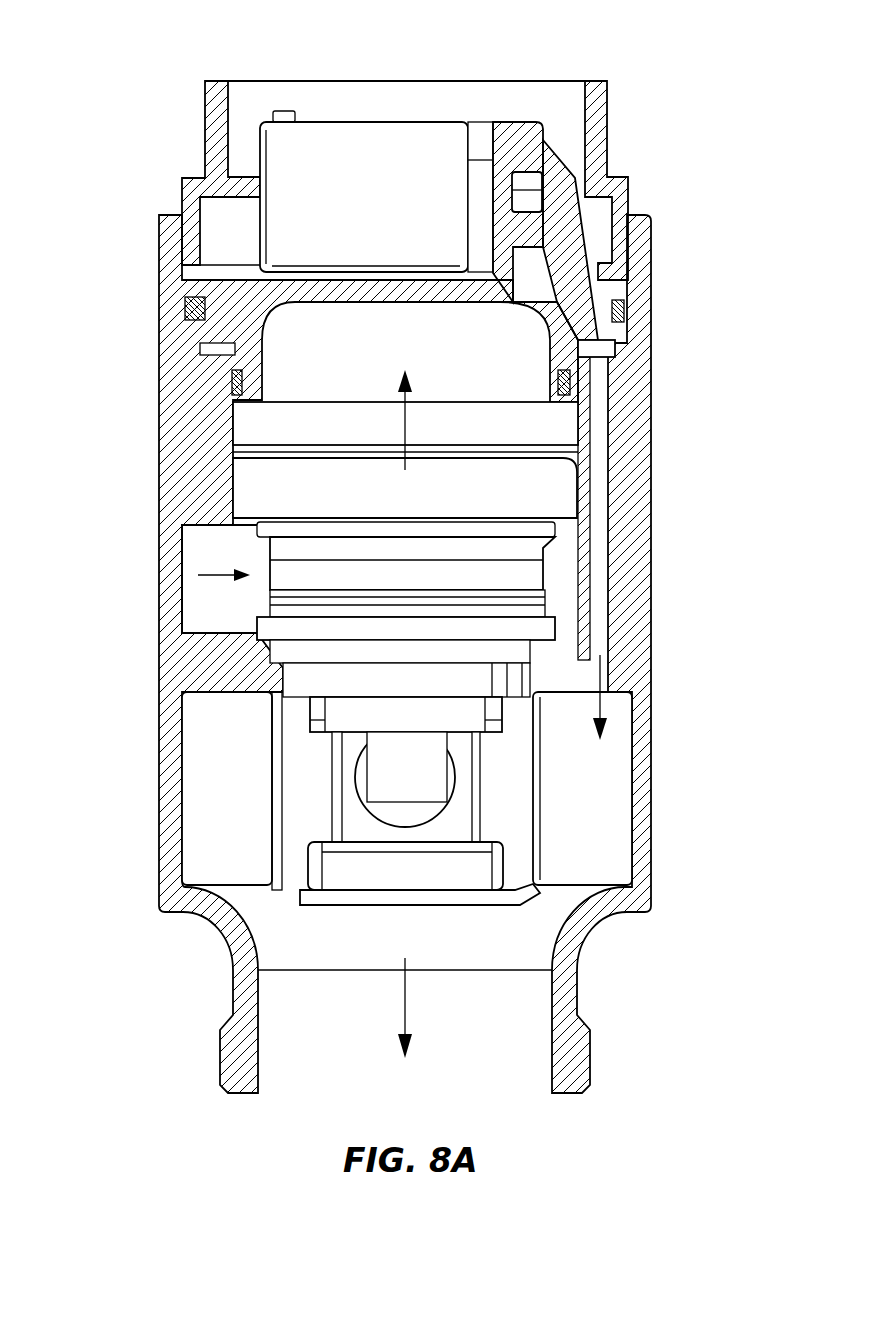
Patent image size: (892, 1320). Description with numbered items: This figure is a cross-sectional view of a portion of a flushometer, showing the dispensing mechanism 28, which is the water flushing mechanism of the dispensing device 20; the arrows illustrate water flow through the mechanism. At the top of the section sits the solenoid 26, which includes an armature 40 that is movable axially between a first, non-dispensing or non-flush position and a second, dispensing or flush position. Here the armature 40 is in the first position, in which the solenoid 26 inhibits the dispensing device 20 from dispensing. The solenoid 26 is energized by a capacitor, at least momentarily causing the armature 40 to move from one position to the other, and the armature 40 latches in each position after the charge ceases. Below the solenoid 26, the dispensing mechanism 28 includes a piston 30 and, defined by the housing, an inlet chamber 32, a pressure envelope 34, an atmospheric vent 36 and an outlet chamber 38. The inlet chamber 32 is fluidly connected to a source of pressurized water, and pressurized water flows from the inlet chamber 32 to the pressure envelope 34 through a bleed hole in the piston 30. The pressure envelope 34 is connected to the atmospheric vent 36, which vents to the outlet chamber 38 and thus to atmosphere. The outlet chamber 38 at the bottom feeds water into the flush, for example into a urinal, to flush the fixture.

The dispensing device 20 is at (130, 76).
The solenoid 26 is at (435, 137).
The dispensing mechanism 28 is at (107, 308).
The piston 30 is at (533, 485).
The inlet chamber 32 is at (213, 540).
The pressure envelope 34 is at (528, 288).
The atmospheric vent 36 is at (598, 352).
The outlet chamber 38 is at (595, 843).
The armature 40 is at (527, 193).